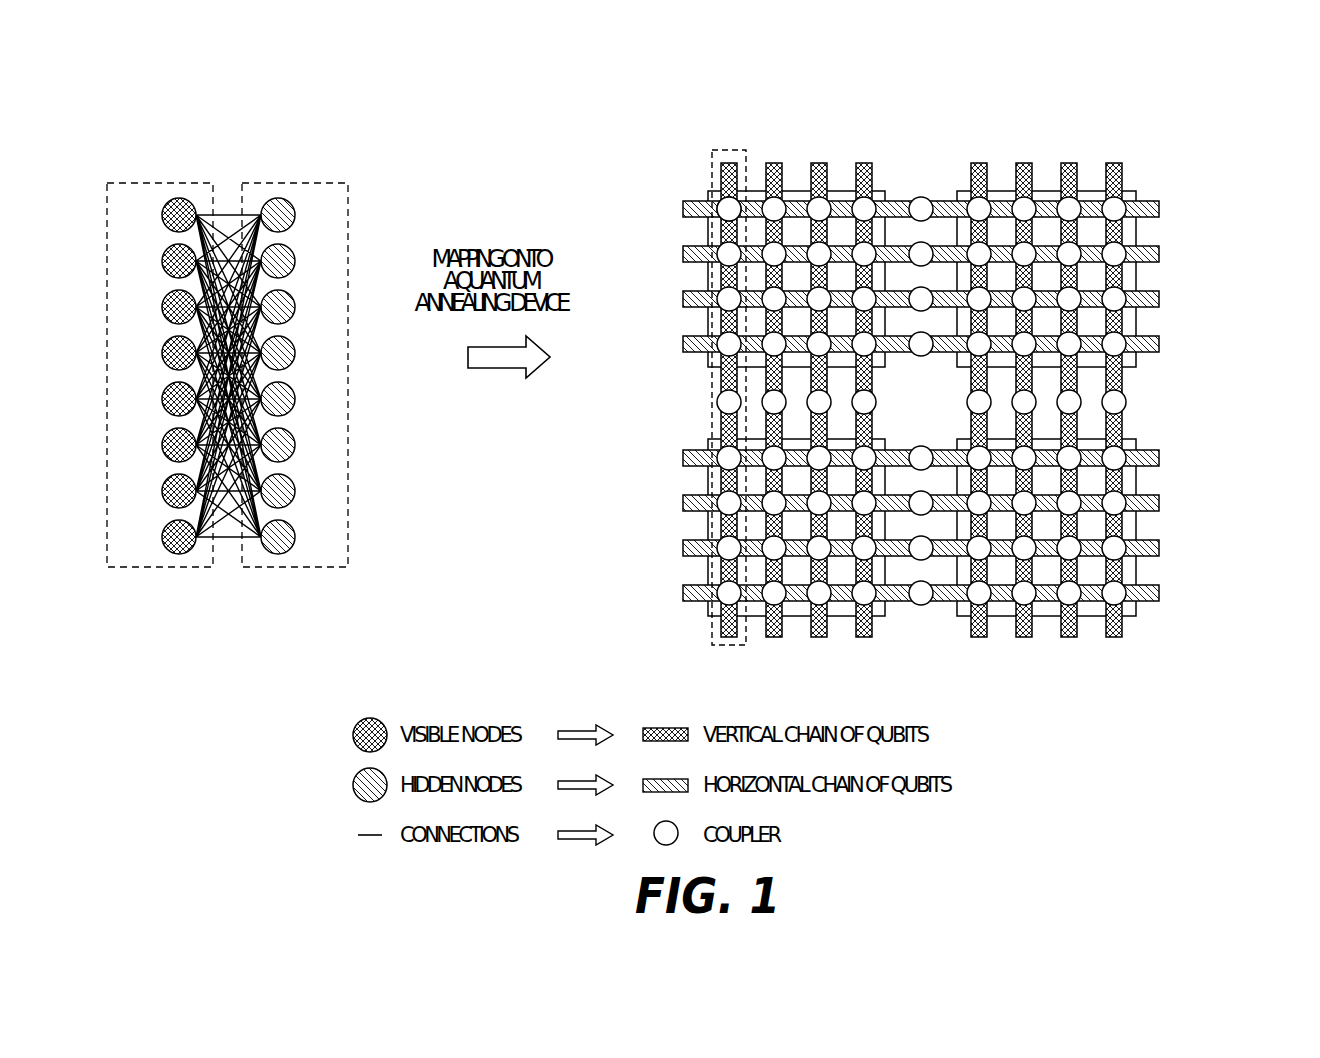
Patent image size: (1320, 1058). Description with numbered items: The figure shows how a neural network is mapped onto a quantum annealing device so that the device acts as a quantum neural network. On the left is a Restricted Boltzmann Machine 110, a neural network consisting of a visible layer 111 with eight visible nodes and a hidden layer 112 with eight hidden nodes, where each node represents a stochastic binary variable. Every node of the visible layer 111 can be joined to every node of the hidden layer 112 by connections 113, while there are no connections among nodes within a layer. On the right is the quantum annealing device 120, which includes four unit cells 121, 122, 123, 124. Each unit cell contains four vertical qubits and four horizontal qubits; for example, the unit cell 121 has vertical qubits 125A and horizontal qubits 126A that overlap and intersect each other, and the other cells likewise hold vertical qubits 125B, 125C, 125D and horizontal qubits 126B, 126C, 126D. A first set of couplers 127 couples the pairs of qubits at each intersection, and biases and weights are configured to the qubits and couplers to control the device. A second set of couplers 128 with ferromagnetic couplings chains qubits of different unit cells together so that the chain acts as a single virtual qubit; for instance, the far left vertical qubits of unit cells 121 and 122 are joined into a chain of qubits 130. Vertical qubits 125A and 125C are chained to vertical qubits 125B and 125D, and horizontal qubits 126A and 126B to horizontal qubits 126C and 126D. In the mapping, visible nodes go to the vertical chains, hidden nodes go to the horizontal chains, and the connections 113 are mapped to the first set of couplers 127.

The Restricted Boltzmann Machine 110 is at (366, 154).
The visible layer 111 is at (153, 567).
The hidden layer 112 is at (286, 567).
The connections 113 is at (243, 523).
The quantum annealing device 120 is at (1260, 82).
The unit cell 121 is at (761, 252).
The unit cell 122 is at (764, 540).
The unit cell 123 is at (1080, 252).
The unit cell 124 is at (1079, 550).
The vertical qubits 125A is at (863, 163).
The vertical qubits 125B is at (863, 637).
The vertical qubits 125C is at (1113, 163).
The vertical qubits 125D is at (1113, 637).
The horizontal qubits 126A is at (683, 209).
The horizontal qubits 126B is at (683, 458).
The horizontal qubits 126C is at (1159, 209).
The horizontal qubits 126D is at (1159, 458).
The first set of couplers 127 is at (725, 206).
The second set of couplers 128 is at (922, 200).
The chain of qubits 130 is at (709, 632).